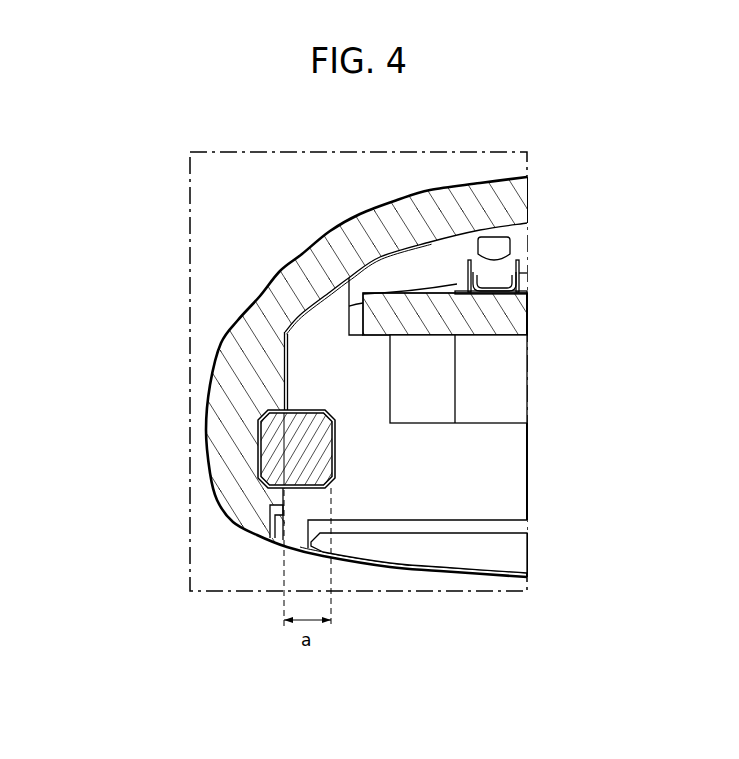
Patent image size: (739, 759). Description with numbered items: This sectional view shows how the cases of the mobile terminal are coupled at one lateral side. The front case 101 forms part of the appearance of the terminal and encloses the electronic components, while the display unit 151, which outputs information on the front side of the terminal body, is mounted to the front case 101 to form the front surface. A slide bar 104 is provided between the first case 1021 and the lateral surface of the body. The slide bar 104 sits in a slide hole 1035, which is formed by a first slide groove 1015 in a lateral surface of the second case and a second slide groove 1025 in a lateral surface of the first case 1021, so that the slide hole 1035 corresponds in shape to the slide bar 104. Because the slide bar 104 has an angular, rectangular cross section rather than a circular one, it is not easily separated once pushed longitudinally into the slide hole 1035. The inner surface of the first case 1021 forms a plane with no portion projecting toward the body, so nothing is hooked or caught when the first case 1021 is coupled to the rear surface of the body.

The front case 101 is at (503, 482).
The first case 1021 is at (462, 200).
The slide hole 1035 is at (100, 285).
The first slide groove 1015 is at (347, 424).
The second slide groove 1025 is at (257, 410).
The slide bar 104 is at (283, 453).
The display unit 151 is at (493, 556).